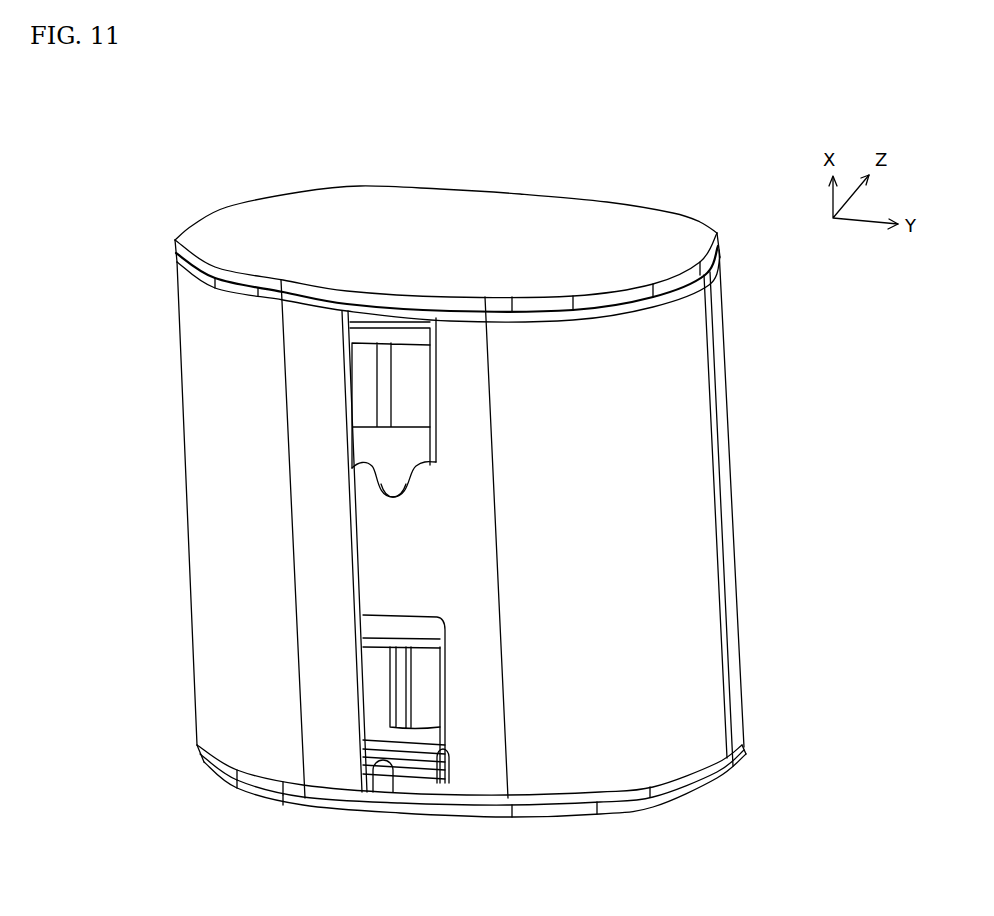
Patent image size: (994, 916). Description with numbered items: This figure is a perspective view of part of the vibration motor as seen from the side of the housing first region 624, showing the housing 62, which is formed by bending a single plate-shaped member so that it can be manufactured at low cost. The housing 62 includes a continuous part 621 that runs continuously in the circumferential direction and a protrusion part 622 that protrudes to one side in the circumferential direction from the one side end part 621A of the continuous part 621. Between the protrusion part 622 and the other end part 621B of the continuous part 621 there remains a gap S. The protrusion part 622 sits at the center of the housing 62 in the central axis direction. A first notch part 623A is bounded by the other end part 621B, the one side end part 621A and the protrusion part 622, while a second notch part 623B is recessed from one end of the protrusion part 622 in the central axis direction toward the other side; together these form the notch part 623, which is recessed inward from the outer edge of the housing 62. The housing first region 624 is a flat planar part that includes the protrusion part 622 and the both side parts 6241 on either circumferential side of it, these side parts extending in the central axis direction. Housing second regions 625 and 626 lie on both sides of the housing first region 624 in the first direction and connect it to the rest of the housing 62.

The housing 62 is at (547, 501).
The continuous part 621 is at (678, 502).
The protrusion part 622 is at (415, 548).
The notch part 623 is at (401, 283).
The first notch part 623A is at (435, 455).
The second notch part 623B is at (392, 462).
The housing first region 624 is at (342, 759).
The both side parts in the circumferential direction 6241 is at (467, 653).
The housing second region 625 is at (215, 632).
The housing second region 626 is at (603, 770).
The one side end part in the circumferential direction 621A is at (437, 750).
The other end part in the circumferential direction 621B is at (390, 762).
The gap S is at (353, 512).